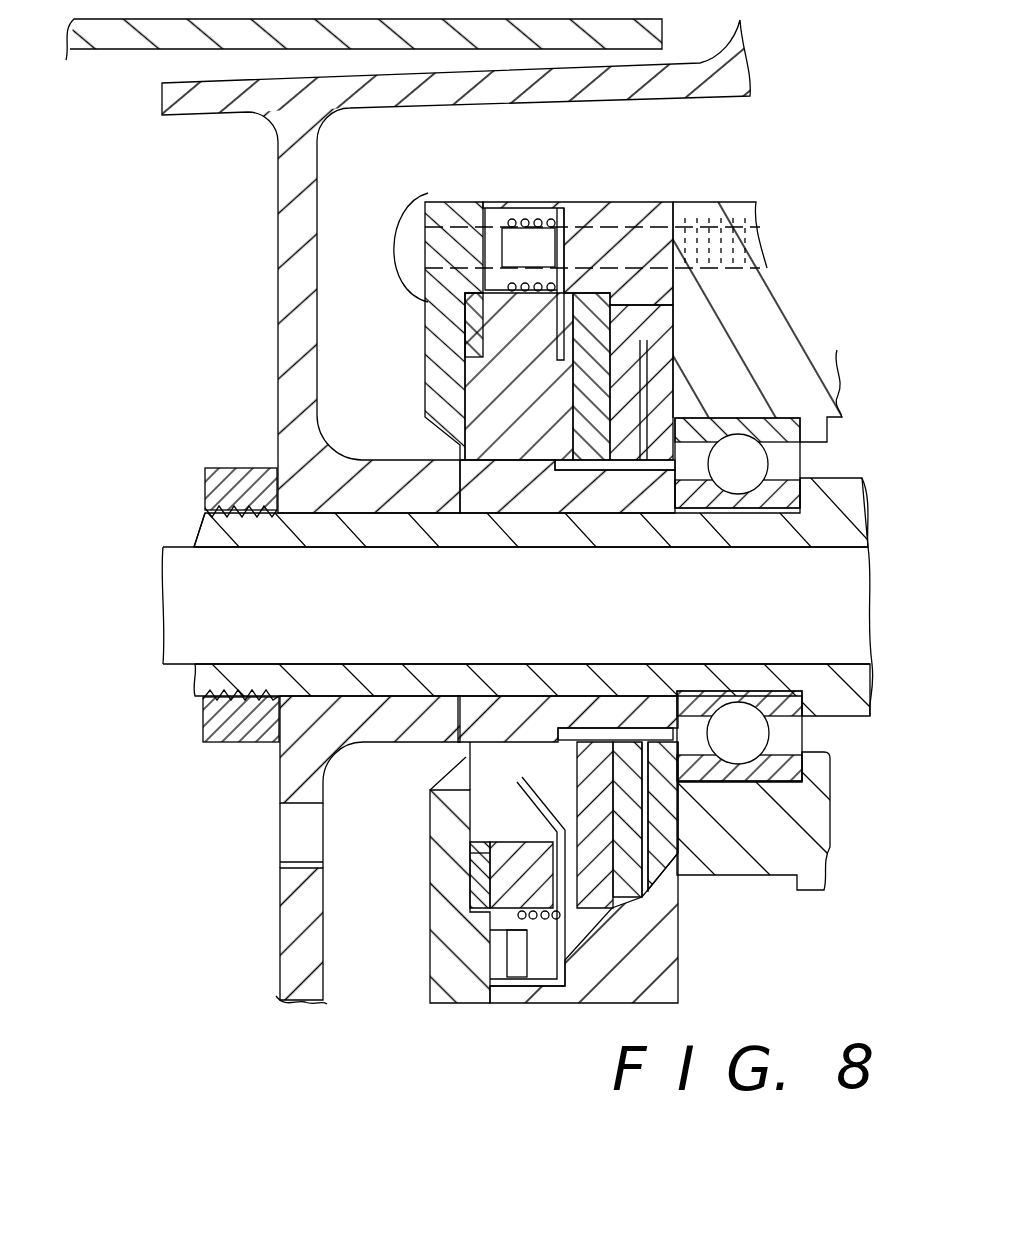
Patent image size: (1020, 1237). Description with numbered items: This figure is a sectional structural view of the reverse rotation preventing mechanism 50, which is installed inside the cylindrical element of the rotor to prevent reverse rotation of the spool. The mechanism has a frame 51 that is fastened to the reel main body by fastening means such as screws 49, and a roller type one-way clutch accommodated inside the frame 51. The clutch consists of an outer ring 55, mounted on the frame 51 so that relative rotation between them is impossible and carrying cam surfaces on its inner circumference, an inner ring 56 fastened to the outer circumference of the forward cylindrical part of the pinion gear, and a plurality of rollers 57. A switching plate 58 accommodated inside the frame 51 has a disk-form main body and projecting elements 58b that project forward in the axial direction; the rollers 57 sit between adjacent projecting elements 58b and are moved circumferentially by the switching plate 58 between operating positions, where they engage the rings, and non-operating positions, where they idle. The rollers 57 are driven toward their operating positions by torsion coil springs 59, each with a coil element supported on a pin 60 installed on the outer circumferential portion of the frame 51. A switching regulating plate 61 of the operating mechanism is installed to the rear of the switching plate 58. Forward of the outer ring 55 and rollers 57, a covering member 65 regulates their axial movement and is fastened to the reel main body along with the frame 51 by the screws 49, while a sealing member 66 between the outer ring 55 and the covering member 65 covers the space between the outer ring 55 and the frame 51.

The screws 49 is at (403, 242).
The reverse rotation preventing mechanism 50 is at (521, 1003).
The frame 51 is at (690, 905).
The outer ring 55 is at (540, 315).
The inner ring 56 is at (637, 497).
The rollers 57 is at (497, 817).
The switching plate 58 is at (590, 342).
The projecting elements 58b is at (490, 412).
The torsion coil springs 59 is at (533, 797).
The pin 60 is at (542, 248).
The switching regulating plate 61 is at (607, 380).
The covering member 65 is at (440, 378).
The sealing member 66 is at (480, 330).